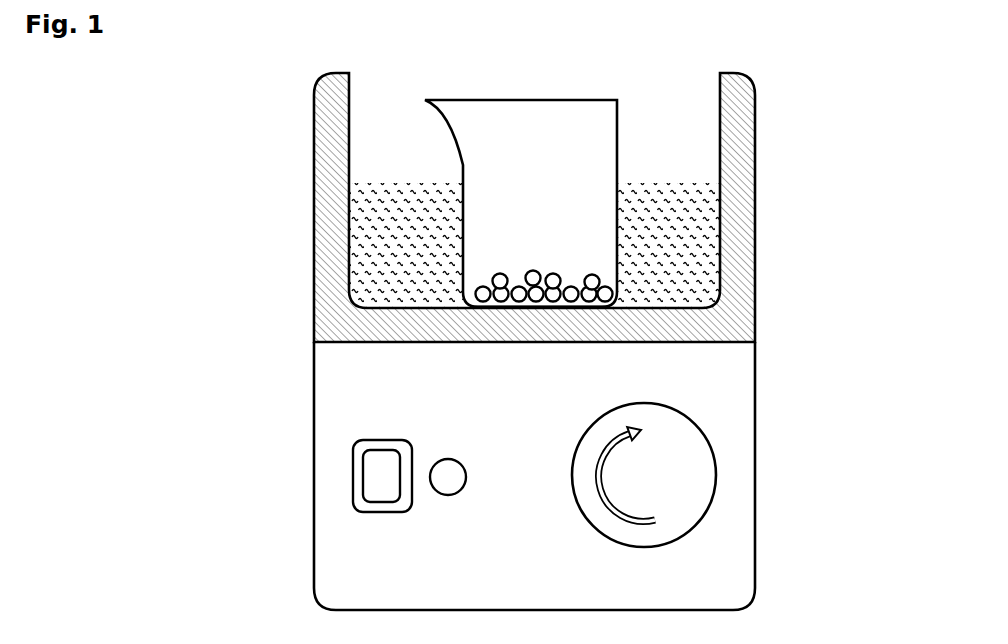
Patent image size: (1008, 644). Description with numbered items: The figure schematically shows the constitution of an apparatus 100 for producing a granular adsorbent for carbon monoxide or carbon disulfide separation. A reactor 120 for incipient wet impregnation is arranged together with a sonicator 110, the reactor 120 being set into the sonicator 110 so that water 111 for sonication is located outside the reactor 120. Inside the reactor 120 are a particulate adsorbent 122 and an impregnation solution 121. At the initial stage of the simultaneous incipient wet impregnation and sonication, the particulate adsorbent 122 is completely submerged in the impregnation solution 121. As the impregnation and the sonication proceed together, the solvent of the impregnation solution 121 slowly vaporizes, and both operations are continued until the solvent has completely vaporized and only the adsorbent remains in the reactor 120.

The liquid processing apparatus 100 is at (252, 116).
The sonicator 110 is at (755, 525).
The water 111 is at (690, 183).
The reactor 120 is at (617, 128).
The impregnation solution 121 is at (602, 275).
The particulate adsorbent 122 is at (600, 309).